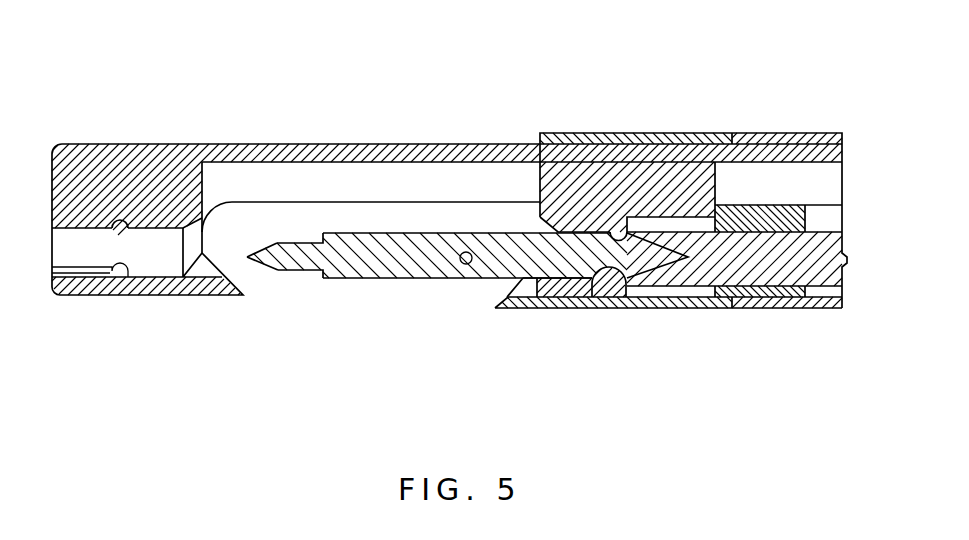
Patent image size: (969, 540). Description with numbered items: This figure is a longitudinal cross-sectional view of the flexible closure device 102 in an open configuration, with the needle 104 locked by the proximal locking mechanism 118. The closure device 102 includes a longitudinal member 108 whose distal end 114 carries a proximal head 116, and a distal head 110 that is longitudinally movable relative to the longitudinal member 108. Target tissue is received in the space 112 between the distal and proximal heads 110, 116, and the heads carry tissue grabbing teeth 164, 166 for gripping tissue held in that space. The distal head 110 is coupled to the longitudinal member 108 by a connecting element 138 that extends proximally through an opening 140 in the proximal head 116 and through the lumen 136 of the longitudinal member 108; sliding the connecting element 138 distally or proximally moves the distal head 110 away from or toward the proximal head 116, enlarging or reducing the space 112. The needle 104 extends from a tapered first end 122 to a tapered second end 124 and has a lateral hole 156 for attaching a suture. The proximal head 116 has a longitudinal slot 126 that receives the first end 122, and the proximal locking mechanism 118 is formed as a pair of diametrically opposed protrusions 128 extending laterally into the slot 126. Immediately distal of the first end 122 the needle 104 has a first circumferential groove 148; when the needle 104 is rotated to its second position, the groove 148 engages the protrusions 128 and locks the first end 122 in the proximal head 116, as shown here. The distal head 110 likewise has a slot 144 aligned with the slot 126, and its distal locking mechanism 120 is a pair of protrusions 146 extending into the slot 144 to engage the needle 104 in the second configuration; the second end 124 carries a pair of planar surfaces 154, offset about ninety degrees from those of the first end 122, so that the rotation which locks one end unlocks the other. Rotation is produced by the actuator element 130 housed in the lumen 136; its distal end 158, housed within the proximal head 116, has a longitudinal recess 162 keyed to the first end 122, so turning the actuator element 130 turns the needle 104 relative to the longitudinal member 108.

The flexible closure device 102 is at (295, 103).
The needle 104 is at (383, 255).
The longitudinal member 108 is at (795, 133).
The distal head 110 is at (84, 142).
The space 112 is at (277, 277).
The distal end 114 is at (743, 302).
The proximal head 116 is at (570, 303).
The proximal locking mechanism 118 is at (596, 134).
The distal locking mechanism 120 is at (125, 240).
The first end 122 is at (660, 236).
The second end 124 is at (272, 245).
The slot 126 is at (690, 212).
The protrusions 128 is at (662, 310).
The actuator element 130 is at (820, 256).
The lumen 136 is at (823, 307).
The connecting element 138 is at (371, 144).
The opening 140 is at (648, 212).
The slot 144 is at (157, 263).
The protrusions 146 is at (107, 292).
The first circumferential groove 148 is at (597, 303).
The planar surfaces 154 is at (308, 242).
The hole 156 is at (465, 264).
The distal end 158 is at (678, 308).
The recess 162 is at (692, 216).
The teeth 164 is at (505, 302).
The teeth 166 is at (227, 292).